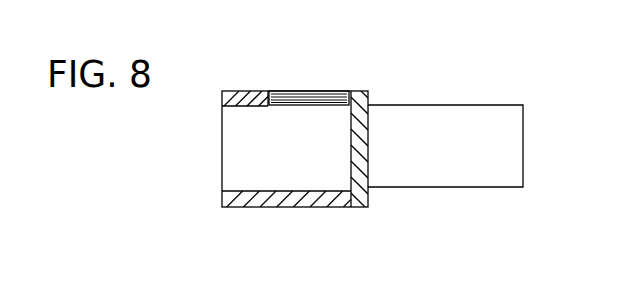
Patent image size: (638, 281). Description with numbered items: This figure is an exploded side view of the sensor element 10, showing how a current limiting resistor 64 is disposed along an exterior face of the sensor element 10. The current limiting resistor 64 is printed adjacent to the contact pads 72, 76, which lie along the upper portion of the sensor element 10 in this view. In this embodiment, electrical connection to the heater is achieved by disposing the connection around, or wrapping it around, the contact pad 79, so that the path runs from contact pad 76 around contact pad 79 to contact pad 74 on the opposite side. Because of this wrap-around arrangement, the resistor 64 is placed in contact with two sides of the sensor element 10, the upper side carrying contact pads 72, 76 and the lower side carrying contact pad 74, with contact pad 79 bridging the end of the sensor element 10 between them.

The sensor element 10 is at (237, 51).
The contact pad 72 is at (257, 91).
The current limiting resistor 64 is at (297, 91).
The contact pad 76 is at (357, 91).
The contact pad 74 is at (343, 207).
The contact pad 79 is at (364, 152).